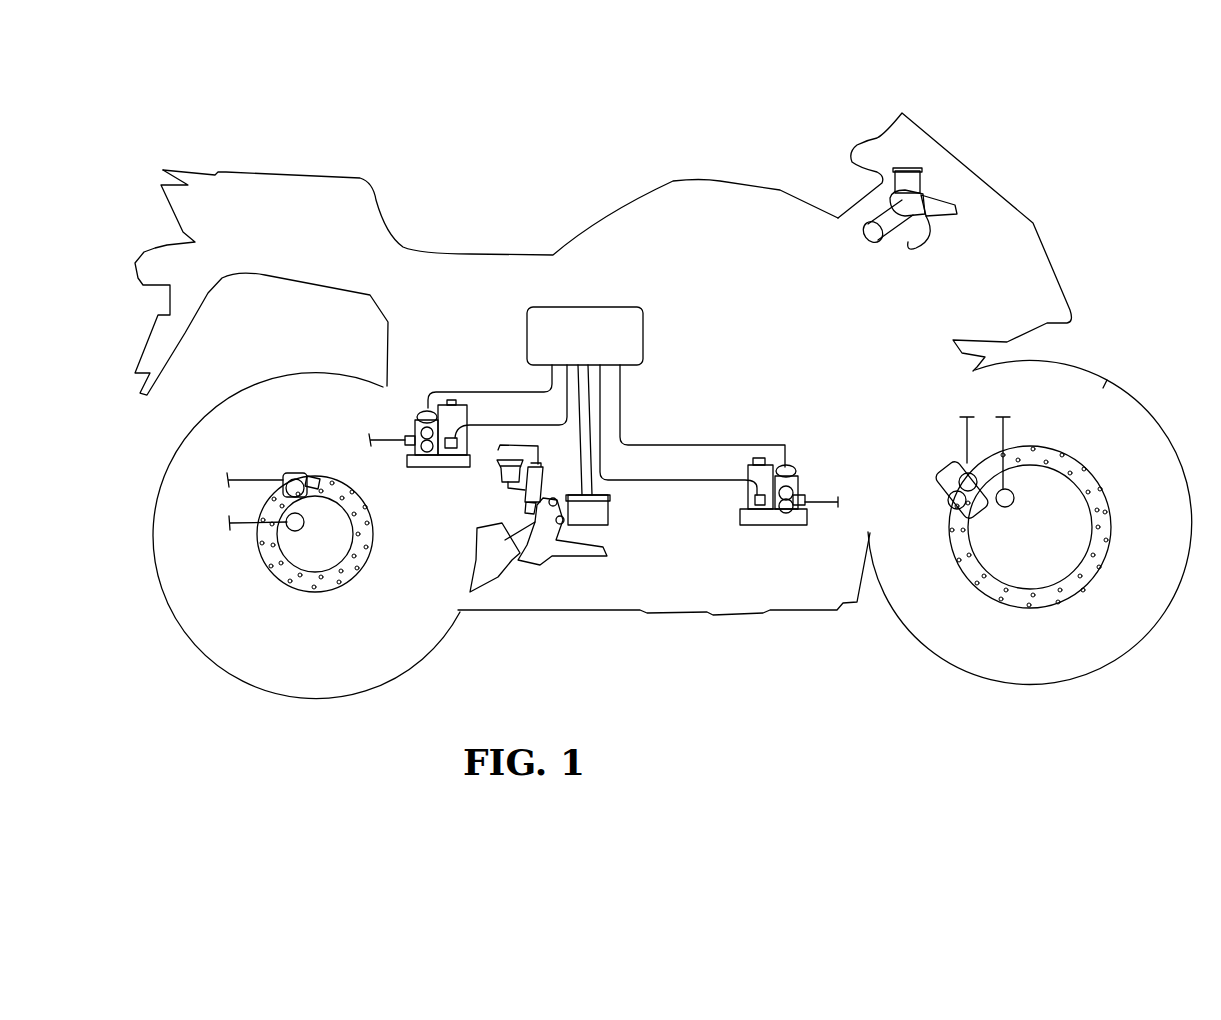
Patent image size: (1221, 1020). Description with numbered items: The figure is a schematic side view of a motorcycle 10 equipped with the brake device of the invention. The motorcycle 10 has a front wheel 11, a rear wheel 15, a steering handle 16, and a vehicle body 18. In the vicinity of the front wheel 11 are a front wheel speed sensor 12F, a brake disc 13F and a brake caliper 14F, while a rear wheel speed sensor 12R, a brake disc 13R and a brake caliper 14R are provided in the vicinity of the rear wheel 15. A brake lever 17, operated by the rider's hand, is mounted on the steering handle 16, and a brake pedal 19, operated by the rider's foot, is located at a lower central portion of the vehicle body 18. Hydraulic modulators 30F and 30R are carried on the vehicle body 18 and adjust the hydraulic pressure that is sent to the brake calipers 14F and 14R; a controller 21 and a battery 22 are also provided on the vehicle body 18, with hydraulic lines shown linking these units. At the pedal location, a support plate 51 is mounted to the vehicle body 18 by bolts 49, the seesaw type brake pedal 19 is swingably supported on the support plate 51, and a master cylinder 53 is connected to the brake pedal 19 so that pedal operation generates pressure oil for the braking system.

The motorcycle 10 is at (603, 177).
The front wheel 11 is at (1143, 643).
The front wheel speed sensor 12F is at (1012, 503).
The rear wheel speed sensor 12R is at (300, 527).
The brake disc 13F is at (1042, 600).
The brake disc 13R is at (320, 593).
The brake caliper 14F is at (952, 488).
The brake caliper 14R is at (292, 477).
The rear wheel 15 is at (238, 682).
The steering handle 16 is at (877, 212).
The brake lever 17 is at (927, 230).
The vehicle body 18 is at (673, 590).
The brake pedal 19 is at (575, 560).
The controller 21 is at (643, 332).
The battery 22 is at (604, 512).
The hydraulic modulator 30F is at (795, 453).
The hydraulic modulator 30R is at (442, 388).
The bolts 49 is at (555, 498).
The support plate 51 is at (522, 560).
The master cylinder 53 is at (525, 495).